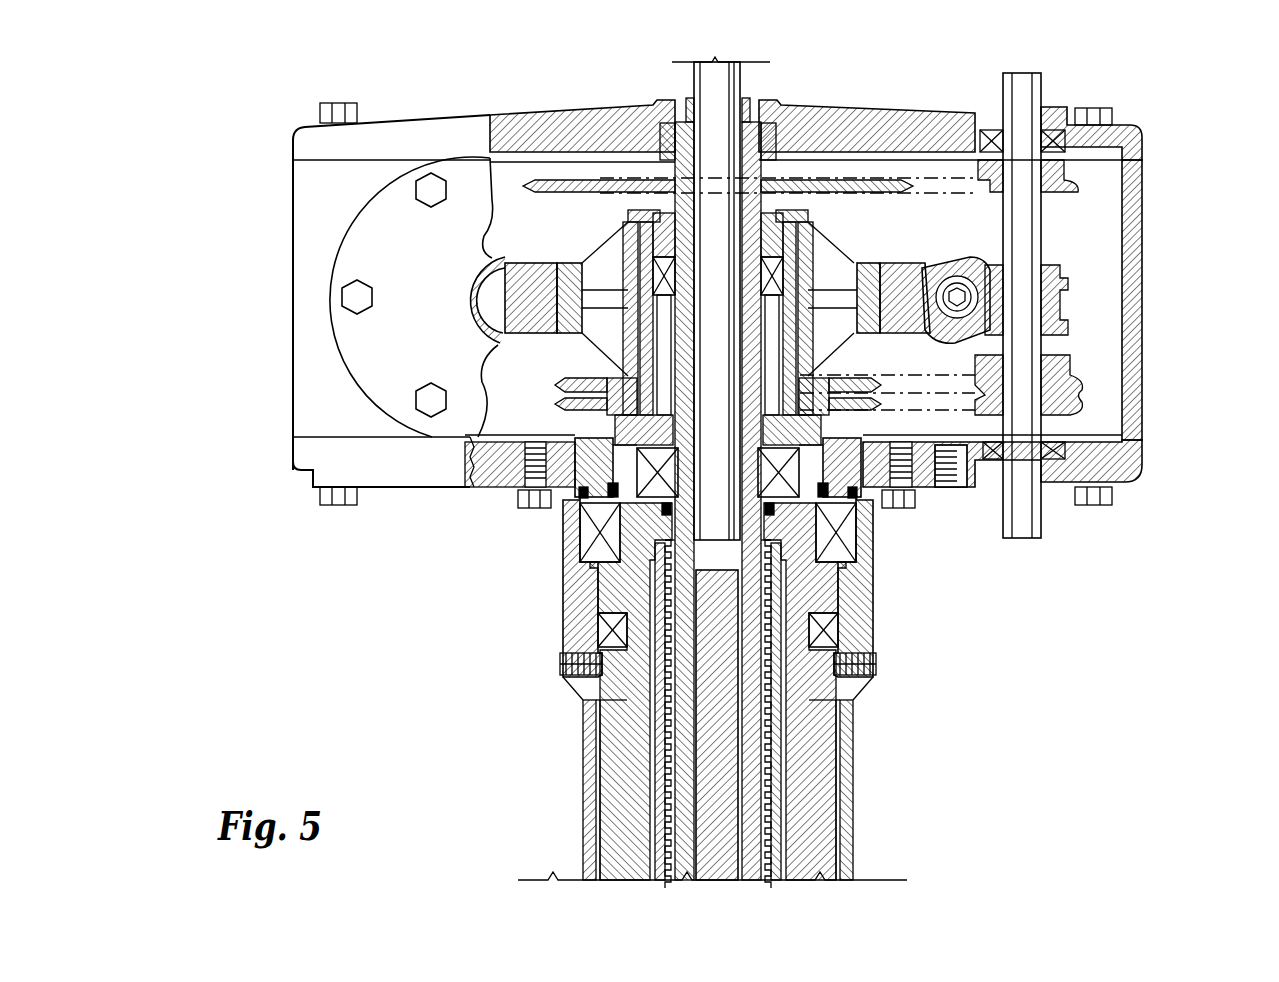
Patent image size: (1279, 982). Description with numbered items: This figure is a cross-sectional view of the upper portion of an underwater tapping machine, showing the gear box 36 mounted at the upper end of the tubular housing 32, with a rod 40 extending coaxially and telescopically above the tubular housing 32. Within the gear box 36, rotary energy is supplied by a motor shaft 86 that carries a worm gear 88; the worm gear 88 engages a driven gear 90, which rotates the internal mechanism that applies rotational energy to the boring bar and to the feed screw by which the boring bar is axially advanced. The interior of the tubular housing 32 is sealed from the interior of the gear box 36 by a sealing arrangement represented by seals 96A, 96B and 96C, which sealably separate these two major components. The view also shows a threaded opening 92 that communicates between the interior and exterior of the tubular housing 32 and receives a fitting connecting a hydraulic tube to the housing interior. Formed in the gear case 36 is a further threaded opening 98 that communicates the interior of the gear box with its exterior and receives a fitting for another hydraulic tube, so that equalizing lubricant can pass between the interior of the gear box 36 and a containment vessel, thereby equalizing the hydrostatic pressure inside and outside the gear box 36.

The tubular housing 32 is at (585, 786).
The gear box 36 is at (1143, 262).
The rod 40 is at (724, 82).
The motor shaft 86 is at (490, 296).
The worm gear 88 is at (497, 268).
The driven gear 90 is at (520, 290).
The threaded opening 92 is at (575, 662).
The seal 96A is at (563, 527).
The seal 96B is at (590, 505).
The seal 96C is at (665, 515).
The threaded opening 98 is at (955, 488).